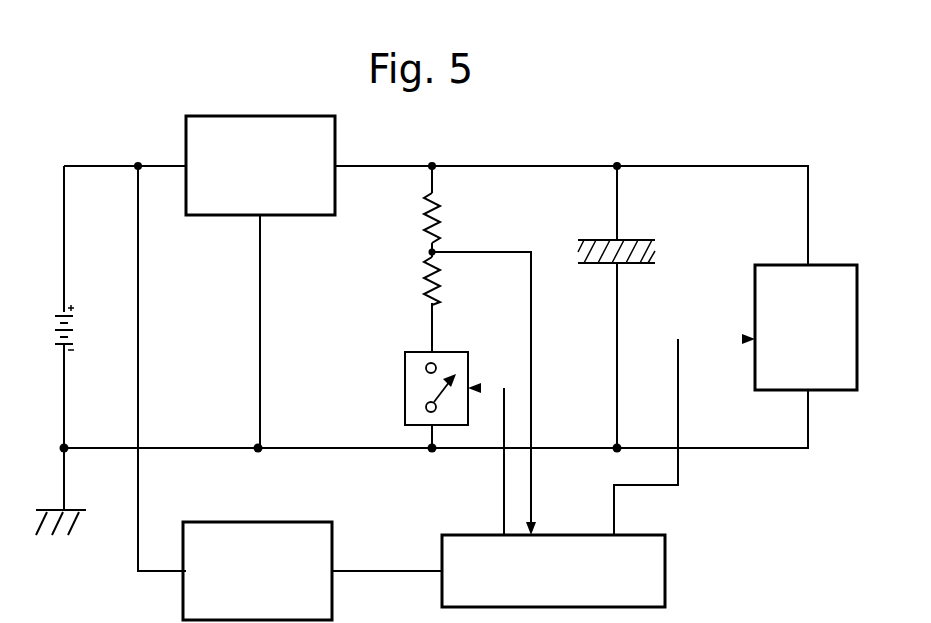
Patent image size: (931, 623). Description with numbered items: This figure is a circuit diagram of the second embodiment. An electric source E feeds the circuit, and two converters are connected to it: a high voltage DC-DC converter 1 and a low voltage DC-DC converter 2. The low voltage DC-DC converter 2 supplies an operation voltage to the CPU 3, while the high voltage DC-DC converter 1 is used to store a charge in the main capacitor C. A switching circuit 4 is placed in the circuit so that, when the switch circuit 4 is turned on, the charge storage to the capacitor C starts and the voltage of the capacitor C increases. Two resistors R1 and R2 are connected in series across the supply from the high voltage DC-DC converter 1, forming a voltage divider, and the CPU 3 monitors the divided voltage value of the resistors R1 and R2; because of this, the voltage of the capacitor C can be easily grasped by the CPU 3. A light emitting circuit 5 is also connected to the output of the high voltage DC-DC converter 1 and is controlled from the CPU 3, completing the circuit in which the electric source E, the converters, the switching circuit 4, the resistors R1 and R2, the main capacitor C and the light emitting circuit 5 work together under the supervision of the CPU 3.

The high voltage DC-DC converter 1 is at (260, 155).
The low voltage DC-DC converter 2 is at (257, 561).
The CPU 3 is at (553, 561).
The switching circuit 4 is at (425, 388).
The light emitting circuit 5 is at (802, 316).
The electric source E is at (46, 327).
The resistor R1 is at (452, 218).
The resistor R2 is at (452, 281).
The main capacitor C is at (625, 247).